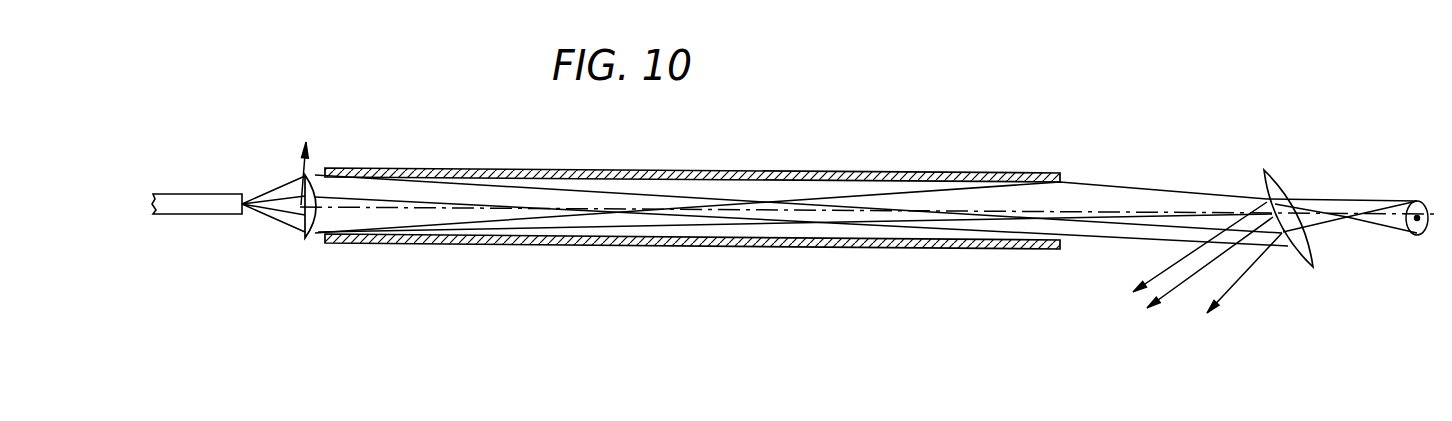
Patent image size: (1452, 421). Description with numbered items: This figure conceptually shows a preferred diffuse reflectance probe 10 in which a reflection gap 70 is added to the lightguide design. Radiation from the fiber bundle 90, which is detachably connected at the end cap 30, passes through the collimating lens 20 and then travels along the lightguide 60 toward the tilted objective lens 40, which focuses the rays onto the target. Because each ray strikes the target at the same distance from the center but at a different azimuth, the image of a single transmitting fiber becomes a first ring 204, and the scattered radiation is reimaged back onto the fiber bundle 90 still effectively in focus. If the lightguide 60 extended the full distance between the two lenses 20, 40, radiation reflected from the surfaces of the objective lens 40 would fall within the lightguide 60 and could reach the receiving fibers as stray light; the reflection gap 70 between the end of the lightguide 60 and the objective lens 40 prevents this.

The diffuse reflectance probe 10 is at (888, 152).
The collimating lens 20 is at (307, 240).
The end cap 30 is at (300, 212).
The objective lens 40 is at (1274, 194).
The lightguide 60 is at (757, 168).
The reflection gap 70 is at (1267, 156).
The fiber bundle 90 is at (195, 216).
The first ring 204 is at (1413, 235).